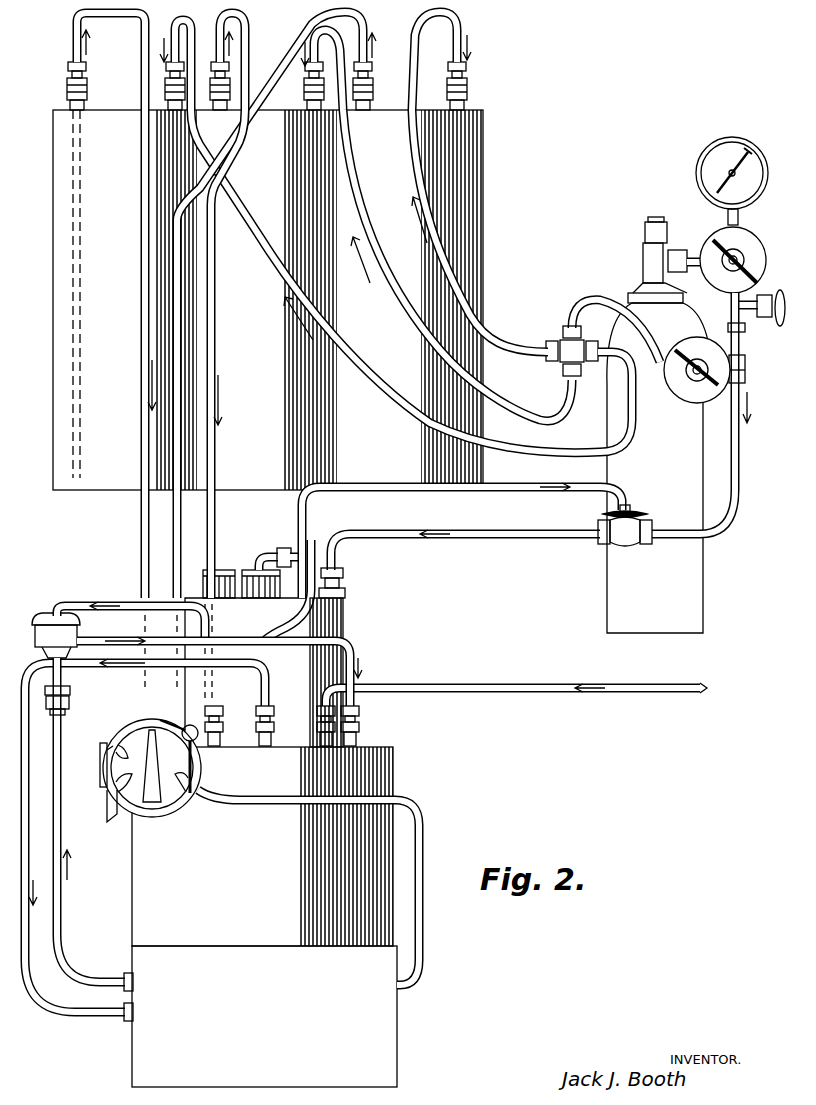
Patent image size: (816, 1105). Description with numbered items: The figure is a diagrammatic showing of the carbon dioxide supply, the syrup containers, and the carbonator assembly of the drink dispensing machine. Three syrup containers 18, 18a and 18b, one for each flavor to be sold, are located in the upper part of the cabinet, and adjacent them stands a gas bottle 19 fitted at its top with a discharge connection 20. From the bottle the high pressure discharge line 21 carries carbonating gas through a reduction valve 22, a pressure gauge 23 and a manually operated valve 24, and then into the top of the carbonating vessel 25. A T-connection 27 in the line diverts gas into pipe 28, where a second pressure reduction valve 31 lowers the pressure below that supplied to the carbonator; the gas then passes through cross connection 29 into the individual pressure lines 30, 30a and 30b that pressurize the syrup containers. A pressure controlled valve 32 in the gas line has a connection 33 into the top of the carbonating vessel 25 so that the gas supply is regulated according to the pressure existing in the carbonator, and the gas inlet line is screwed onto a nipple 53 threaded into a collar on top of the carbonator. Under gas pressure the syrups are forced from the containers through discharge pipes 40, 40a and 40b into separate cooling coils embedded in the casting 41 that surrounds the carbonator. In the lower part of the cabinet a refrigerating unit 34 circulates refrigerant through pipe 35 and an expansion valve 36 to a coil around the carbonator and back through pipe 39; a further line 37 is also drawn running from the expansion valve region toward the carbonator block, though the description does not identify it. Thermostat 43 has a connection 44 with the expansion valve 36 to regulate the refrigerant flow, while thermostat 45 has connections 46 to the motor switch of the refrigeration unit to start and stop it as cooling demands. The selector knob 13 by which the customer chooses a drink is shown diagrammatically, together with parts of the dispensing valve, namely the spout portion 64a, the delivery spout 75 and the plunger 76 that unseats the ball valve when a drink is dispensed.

The selector knob 13 is at (170, 810).
The syrup container 18 is at (56, 441).
The syrup container 18a is at (318, 445).
The syrup container 18b is at (470, 173).
The gas bottle 19 is at (695, 580).
The discharge connection 20 is at (645, 248).
The high pressure discharge line 21 is at (693, 268).
The reduction valve 22 is at (748, 236).
The pressure gauge 23 is at (756, 160).
The manually operated valve 24 is at (768, 298).
The carbonating vessel 25 is at (343, 622).
The T-connection 27 is at (746, 363).
The pipe 28 is at (641, 332).
The cross connection 29 is at (562, 345).
The pressure line 30 is at (352, 360).
The pressure line 30a is at (405, 310).
The pressure line 30b is at (500, 330).
The second pressure reduction valve 31 is at (694, 398).
The pressure controlled valve 32 is at (632, 506).
The connection 33 is at (520, 487).
The refrigerating unit 34 is at (386, 1036).
The pipe 35 is at (64, 918).
The expansion valve 36 is at (38, 636).
The conduit 37 is at (354, 648).
The pipe 39 is at (90, 667).
The discharge pipe 40 is at (142, 510).
The discharge pipe 40a is at (172, 520).
The discharge pipe 40b is at (213, 518).
The casting 41 is at (393, 748).
The thermostat 43 is at (236, 746).
The connection 44 is at (112, 601).
The thermostat 45 is at (290, 620).
The connections 46 is at (422, 838).
The nipple 53 is at (343, 575).
The spout portion 64a is at (107, 748).
The delivery spout 75 is at (113, 820).
The plunger 76 is at (100, 774).